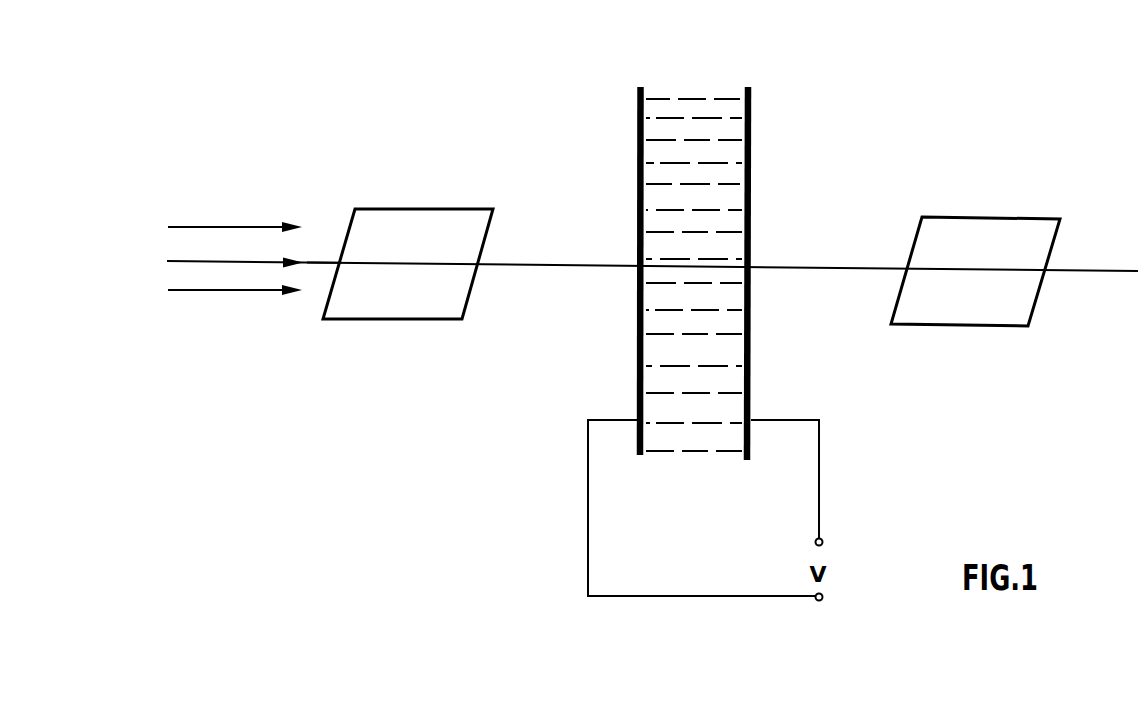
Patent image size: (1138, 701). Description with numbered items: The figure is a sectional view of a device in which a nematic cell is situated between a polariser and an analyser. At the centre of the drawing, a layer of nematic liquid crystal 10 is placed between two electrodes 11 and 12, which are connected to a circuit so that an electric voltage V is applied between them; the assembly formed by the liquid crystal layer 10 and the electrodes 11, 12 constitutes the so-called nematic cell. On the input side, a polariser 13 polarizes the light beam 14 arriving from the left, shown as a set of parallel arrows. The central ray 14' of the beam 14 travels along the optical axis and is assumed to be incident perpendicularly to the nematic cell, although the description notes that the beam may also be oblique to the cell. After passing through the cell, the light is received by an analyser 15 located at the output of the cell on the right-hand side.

The layer of nematic liquid crystal 10 is at (706, 128).
The electrode 11 is at (640, 143).
The electrode 12 is at (752, 163).
The polariser 13 is at (428, 223).
The light beam 14 is at (235, 214).
The central ray 14' is at (330, 198).
The analyser 15 is at (1030, 232).